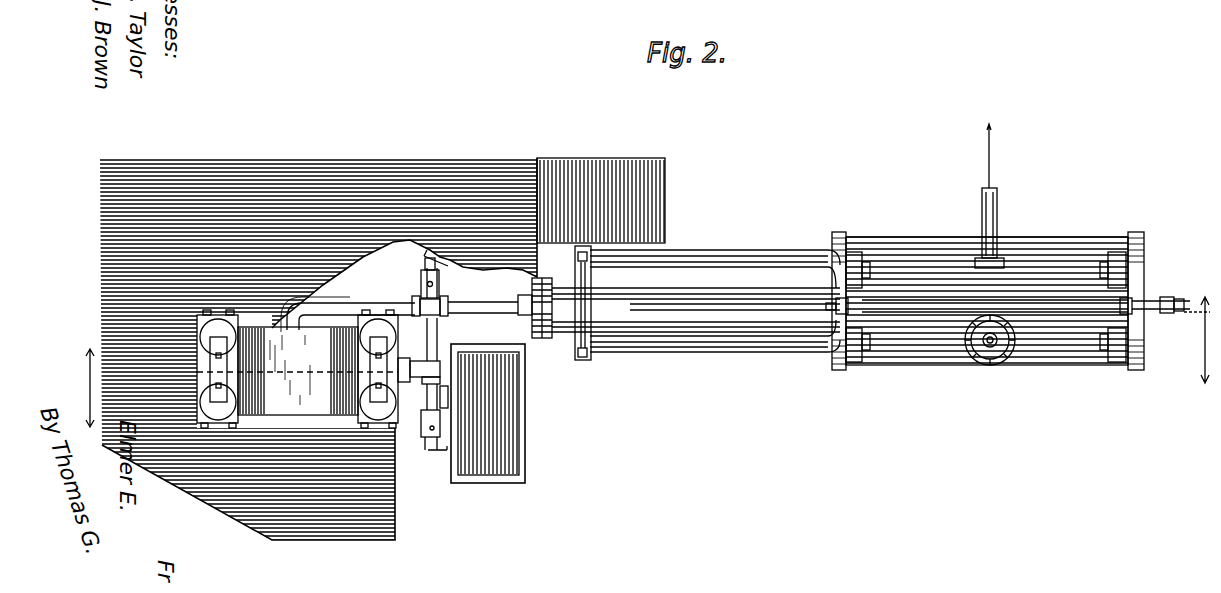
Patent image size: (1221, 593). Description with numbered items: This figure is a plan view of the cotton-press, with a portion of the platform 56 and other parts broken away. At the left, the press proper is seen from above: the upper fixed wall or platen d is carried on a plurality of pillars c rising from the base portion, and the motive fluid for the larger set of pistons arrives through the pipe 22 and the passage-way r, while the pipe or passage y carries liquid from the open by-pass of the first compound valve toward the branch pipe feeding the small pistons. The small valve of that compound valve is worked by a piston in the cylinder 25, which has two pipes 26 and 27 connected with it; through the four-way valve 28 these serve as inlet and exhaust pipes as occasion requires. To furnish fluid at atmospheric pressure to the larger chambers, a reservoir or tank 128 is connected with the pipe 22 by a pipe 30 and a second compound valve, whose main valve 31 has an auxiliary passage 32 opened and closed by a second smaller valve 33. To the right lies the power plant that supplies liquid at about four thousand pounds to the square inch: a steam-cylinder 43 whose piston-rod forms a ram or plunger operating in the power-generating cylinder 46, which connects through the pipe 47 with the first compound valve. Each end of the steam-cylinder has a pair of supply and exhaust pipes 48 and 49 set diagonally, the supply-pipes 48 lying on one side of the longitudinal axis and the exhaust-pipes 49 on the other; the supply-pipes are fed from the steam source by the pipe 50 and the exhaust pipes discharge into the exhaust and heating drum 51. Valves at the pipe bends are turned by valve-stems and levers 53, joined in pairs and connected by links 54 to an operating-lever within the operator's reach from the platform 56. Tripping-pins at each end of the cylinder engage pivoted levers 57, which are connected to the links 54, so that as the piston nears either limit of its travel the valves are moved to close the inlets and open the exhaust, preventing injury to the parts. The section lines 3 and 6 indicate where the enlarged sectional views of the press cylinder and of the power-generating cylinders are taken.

The section line 3 is at (100, 372).
The section line 6 is at (1211, 340).
The pipe or passage 22 is at (437, 328).
The cylinder 25 is at (440, 290).
The pipe 26 is at (424, 284).
The pipe 27 is at (425, 272).
The four-way valve 28 is at (440, 364).
The pipe 30 is at (430, 402).
The main valve 31 is at (428, 424).
The auxiliary passage 32 is at (440, 404).
The second smaller valve 33 is at (434, 430).
The steam-cylinder 43 is at (1084, 246).
The power-generating cylinder 46 is at (700, 342).
The pipe 47 is at (507, 316).
The supply pipes 48 is at (858, 258).
The exhaust pipes 49 is at (866, 358).
The pipe 50 is at (1000, 218).
The exhaust and heating drum 51 is at (992, 366).
The levers 53 is at (838, 322).
The links 54 is at (722, 300).
The platform 56 is at (366, 163).
The pivoted levers 57 is at (794, 318).
The reservoir or tank 128 is at (522, 448).
The upper fixed wall or platen d is at (297, 369).
The pillars c is at (358, 395).
The pipe or passage y is at (336, 306).
The passage-way r is at (404, 361).